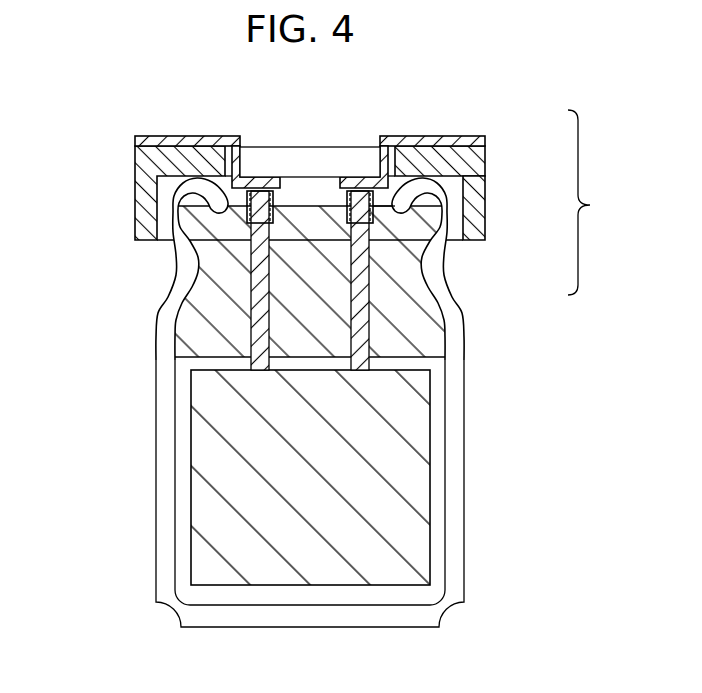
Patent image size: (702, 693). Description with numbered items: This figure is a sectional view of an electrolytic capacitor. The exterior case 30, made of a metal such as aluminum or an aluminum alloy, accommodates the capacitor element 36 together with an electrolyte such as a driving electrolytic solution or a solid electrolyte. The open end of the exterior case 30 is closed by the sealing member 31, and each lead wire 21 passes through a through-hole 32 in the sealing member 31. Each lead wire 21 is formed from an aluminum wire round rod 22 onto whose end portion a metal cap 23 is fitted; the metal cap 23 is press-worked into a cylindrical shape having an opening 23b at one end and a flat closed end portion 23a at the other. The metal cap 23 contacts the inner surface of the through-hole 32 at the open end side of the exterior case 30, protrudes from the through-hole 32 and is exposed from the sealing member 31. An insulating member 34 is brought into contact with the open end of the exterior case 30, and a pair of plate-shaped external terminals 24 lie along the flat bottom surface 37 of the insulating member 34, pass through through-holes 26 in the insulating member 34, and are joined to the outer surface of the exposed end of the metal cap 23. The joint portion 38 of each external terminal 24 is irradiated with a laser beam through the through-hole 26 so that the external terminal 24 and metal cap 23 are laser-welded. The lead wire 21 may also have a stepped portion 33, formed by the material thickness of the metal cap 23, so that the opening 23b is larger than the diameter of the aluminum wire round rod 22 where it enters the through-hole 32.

The lead wire 21 is at (599, 202).
The aluminum wire round rod 22 is at (368, 268).
The metal cap 23 is at (400, 208).
The flat closed end portion 23a is at (395, 206).
The opening 23b is at (470, 234).
The external terminal 24 is at (155, 136).
The through-hole 26 is at (278, 148).
The exterior case 30 is at (155, 483).
The sealing member 31 is at (200, 338).
The through-hole 32 is at (248, 271).
The stepped portion 33 is at (245, 225).
The insulating member 34 is at (150, 163).
The capacitor element 36 is at (415, 482).
The bottom surface 37 is at (195, 136).
The joint portion 38 is at (360, 178).